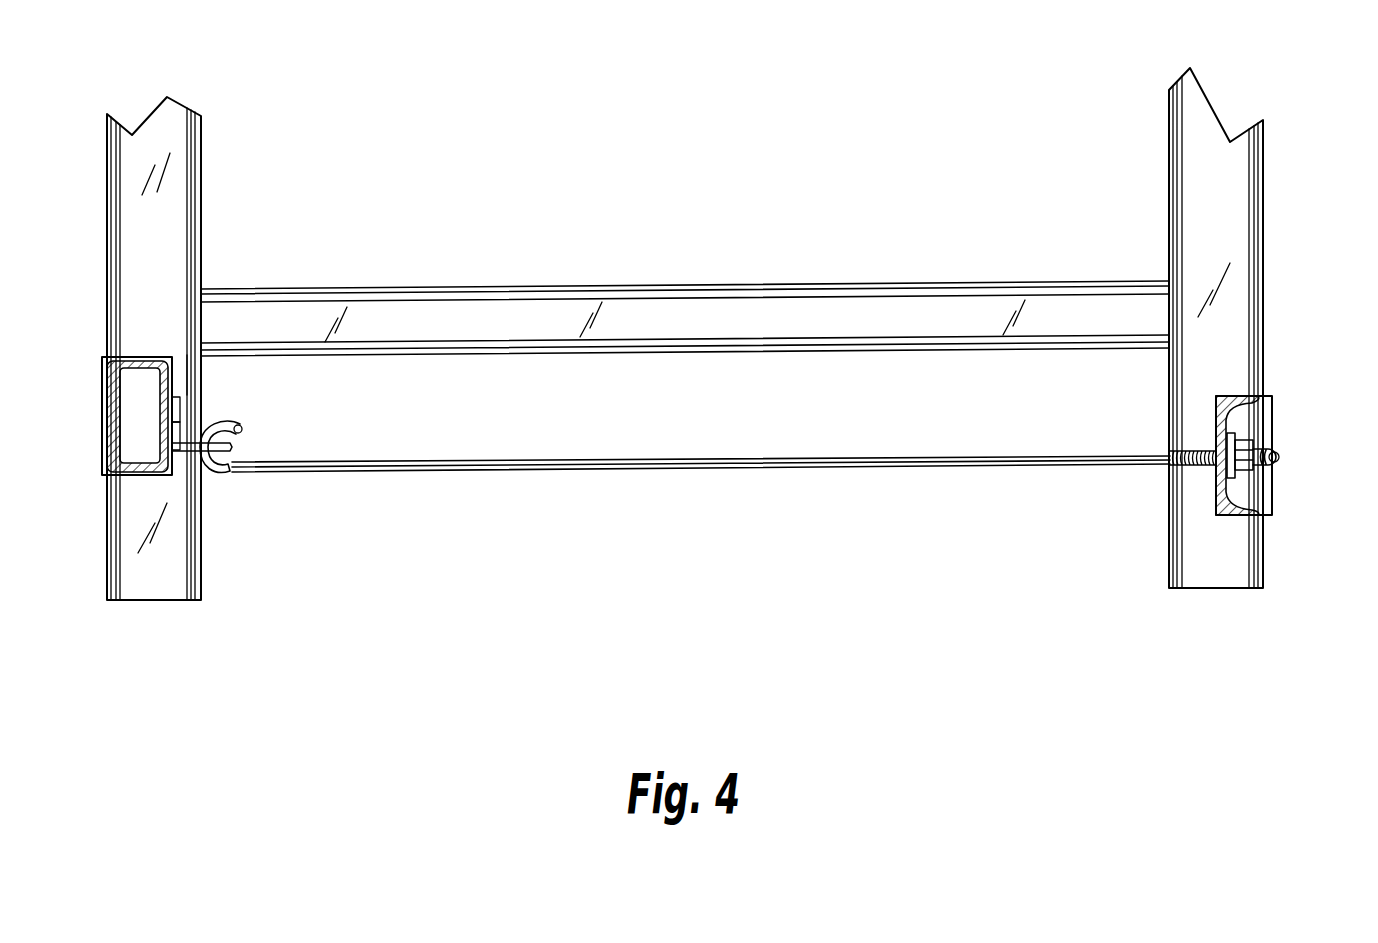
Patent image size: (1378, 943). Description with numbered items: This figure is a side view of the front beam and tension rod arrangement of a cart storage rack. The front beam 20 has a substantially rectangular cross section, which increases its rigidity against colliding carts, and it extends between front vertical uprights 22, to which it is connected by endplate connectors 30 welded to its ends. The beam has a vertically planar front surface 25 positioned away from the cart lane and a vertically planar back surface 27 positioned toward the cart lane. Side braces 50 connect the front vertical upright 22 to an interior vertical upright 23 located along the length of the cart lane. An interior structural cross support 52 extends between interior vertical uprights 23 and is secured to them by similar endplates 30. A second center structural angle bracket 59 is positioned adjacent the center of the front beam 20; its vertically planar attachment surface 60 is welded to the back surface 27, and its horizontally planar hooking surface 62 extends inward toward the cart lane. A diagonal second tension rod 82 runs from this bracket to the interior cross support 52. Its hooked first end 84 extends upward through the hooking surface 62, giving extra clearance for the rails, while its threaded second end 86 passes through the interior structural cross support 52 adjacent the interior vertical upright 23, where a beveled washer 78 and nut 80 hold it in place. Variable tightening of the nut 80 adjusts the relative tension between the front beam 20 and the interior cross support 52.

The front vertical upright 22 is at (178, 200).
The interior vertical upright 23 is at (1227, 210).
The side brace 50 is at (680, 303).
The second tension rod 82 is at (510, 462).
The endplate connector 30 is at (102, 358).
The front beam 20 is at (110, 417).
The front surface 25 is at (110, 442).
The back surface 27 is at (185, 375).
The attachment surface 60 is at (180, 403).
The second center structural angle bracket 59 is at (180, 412).
The hooking surface 62 is at (180, 467).
The hooked first end 84 is at (243, 430).
The interior structural cross support 52 is at (1270, 405).
The beveled washer 78 is at (1240, 432).
The nut 80 is at (1268, 466).
The threaded second end 86 is at (1213, 452).